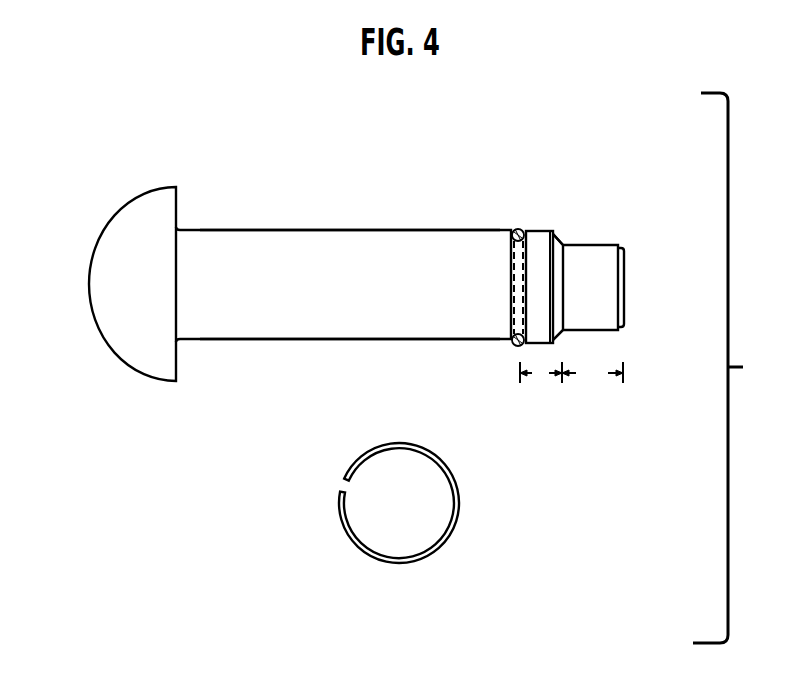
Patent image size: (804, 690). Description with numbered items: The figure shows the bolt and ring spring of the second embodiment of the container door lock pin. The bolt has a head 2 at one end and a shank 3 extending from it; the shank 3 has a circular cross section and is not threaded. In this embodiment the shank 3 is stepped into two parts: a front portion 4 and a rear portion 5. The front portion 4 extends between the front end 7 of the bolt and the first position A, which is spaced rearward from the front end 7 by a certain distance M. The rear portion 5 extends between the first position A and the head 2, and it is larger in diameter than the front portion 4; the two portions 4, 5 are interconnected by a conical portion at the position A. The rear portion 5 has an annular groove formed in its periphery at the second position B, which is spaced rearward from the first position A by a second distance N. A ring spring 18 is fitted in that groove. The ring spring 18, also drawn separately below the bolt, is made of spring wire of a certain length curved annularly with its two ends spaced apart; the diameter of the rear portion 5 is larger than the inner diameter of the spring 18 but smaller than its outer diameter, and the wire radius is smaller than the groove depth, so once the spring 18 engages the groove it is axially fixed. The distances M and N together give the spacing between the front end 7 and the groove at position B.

The head 2 is at (113, 260).
The shank 3 is at (293, 230).
The rear portion 5 is at (358, 250).
The ring spring 18 is at (517, 230).
The front portion 4 is at (607, 252).
The front end 7 is at (624, 288).
The first position A is at (564, 268).
The second position B is at (519, 374).
The second distance N is at (541, 373).
The distance M is at (592, 373).